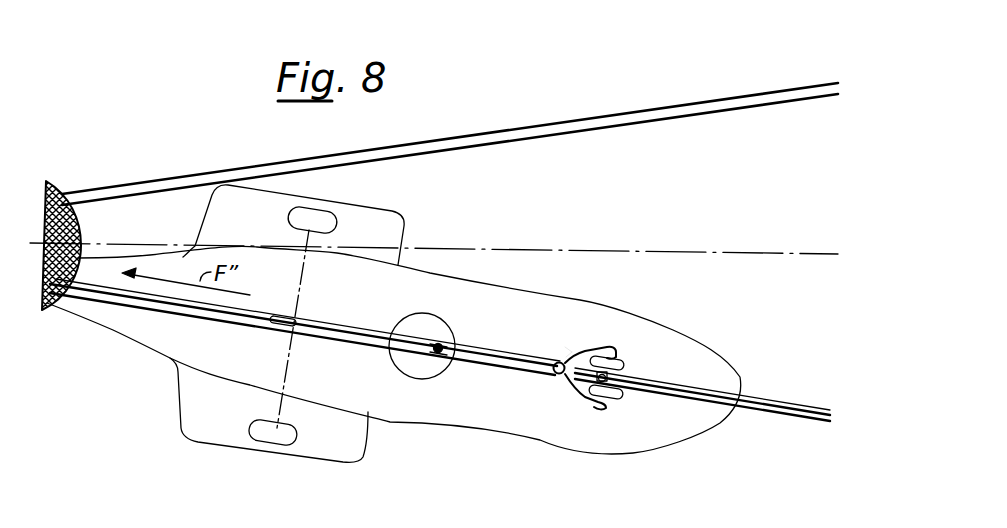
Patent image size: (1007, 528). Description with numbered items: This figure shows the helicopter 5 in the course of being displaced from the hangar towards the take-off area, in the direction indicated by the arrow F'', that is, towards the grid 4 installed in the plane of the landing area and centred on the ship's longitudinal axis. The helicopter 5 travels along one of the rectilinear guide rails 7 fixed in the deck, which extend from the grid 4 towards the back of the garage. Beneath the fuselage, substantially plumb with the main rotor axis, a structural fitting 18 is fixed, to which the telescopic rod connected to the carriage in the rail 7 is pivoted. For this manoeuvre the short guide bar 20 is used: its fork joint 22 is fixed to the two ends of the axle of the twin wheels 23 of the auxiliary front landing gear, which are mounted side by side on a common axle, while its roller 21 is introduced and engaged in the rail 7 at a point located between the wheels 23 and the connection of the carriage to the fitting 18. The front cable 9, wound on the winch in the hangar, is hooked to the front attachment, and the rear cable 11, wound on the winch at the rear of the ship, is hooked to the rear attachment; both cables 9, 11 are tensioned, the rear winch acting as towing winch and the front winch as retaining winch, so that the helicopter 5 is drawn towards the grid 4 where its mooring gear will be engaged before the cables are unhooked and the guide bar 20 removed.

The grid 4 is at (76, 222).
The helicopter 5 is at (463, 428).
The guide rail 7 is at (693, 110).
The front cable 9 is at (758, 410).
The rear cable 11 is at (157, 303).
The structural fitting 18 is at (437, 352).
The short guide bar 20 is at (574, 354).
The roller 21 is at (554, 372).
The fork joint 22 is at (584, 400).
The twin wheels 23 is at (612, 367).